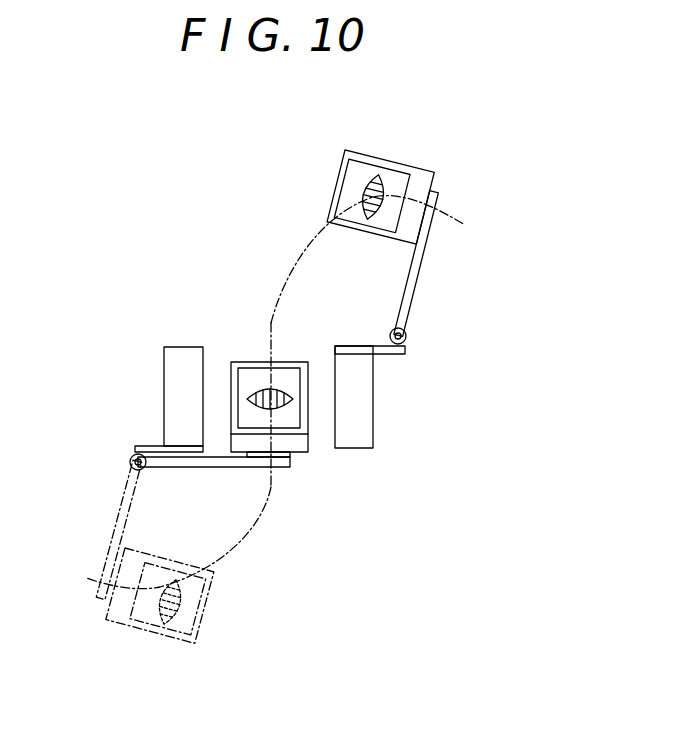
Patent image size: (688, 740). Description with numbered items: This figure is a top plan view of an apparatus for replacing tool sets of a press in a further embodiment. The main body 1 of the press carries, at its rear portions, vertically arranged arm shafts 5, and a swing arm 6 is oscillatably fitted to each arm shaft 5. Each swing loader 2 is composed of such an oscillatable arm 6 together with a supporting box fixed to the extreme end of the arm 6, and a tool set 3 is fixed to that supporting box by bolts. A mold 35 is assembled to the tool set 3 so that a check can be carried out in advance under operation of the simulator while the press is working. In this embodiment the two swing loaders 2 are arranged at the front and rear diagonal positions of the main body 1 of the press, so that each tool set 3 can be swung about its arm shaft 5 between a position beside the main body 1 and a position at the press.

The main body 1 is at (320, 400).
The swing loader 2 is at (438, 176).
The tool set 3 is at (393, 180).
The arm shaft 5 is at (406, 338).
The swing arm 6 is at (420, 295).
The mold 35 is at (358, 193).